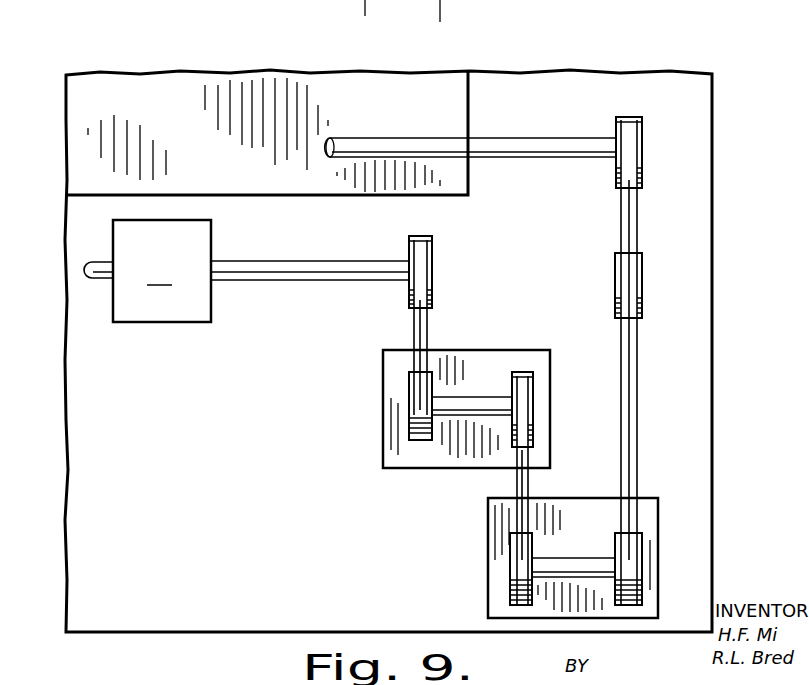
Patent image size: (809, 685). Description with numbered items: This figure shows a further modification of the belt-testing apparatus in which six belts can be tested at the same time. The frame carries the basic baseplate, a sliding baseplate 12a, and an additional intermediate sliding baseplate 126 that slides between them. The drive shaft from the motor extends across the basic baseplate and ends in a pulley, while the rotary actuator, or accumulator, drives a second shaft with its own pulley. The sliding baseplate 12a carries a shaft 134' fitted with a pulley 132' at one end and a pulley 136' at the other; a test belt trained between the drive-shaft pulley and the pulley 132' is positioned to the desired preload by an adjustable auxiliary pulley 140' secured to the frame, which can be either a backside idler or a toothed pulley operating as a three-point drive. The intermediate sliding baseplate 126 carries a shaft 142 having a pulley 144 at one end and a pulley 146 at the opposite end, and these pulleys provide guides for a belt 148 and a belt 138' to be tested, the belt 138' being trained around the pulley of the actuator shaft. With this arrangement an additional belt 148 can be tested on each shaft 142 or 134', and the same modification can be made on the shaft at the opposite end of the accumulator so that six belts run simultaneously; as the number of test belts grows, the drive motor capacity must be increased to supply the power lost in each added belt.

The sliding baseplate 12a is at (650, 520).
The intermediate sliding baseplate 126 is at (541, 418).
The pulley 132' is at (700, 569).
The shaft 134' is at (573, 549).
The pulley 136' is at (484, 569).
The belt 138' is at (377, 327).
The auxiliary pulley 140' is at (700, 285).
The shaft 142 is at (466, 400).
The pulley 144 is at (535, 382).
The pulley 146 is at (409, 436).
The belt 148 is at (517, 480).